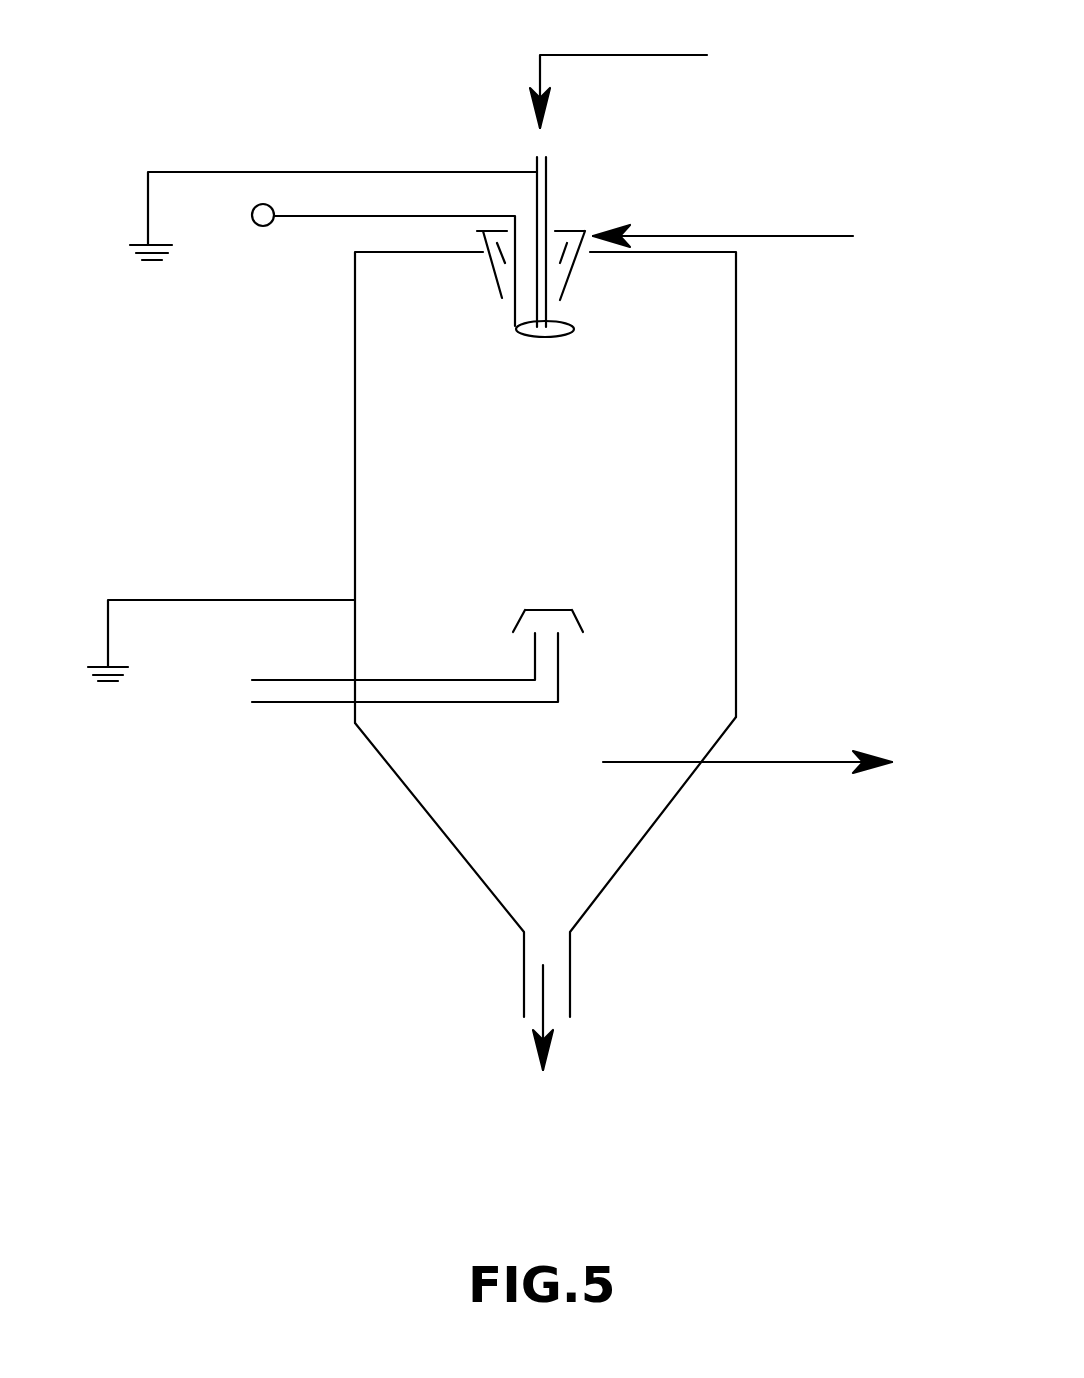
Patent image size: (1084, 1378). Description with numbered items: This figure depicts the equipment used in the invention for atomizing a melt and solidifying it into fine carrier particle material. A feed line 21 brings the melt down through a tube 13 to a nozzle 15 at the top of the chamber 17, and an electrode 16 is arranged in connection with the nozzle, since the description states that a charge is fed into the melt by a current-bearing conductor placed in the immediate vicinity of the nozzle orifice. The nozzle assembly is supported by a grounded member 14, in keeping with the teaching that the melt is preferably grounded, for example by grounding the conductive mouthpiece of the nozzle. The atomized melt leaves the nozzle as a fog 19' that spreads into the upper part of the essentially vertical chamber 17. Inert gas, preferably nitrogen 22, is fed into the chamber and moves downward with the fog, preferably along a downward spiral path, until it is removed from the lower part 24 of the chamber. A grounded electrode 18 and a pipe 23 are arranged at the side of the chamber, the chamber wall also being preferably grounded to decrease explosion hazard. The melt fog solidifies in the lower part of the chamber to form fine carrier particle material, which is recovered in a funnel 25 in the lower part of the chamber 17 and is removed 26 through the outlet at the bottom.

The liquid feed tube 13 is at (548, 187).
The grounded plate / support 14 is at (317, 170).
The nozzle insulator cone 15 is at (542, 220).
The spray electrode disc 16 is at (550, 338).
The chamber 17 is at (736, 527).
The grounded electrode 18 is at (317, 598).
The spray cone 19' is at (482, 437).
The liquid inlet 21 is at (641, 82).
The nitrogen 22 is at (748, 231).
The gas feed pipe 23 is at (317, 703).
The lower part of the chamber 24 is at (747, 752).
The funnel 25 is at (638, 848).
The removal 26 is at (545, 1012).